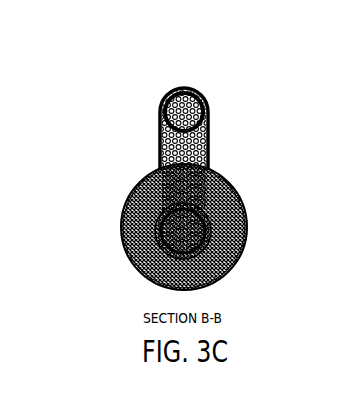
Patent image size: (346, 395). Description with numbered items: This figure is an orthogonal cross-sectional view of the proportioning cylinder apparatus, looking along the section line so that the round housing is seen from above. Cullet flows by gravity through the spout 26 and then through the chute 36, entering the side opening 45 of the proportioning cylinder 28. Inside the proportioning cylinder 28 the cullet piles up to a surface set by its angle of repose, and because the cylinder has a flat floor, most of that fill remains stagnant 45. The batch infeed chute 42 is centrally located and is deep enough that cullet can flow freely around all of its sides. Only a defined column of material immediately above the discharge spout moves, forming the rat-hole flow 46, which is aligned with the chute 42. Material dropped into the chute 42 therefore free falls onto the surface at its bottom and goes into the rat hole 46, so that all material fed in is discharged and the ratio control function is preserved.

The spout 26 is at (163, 97).
The chute 36 is at (160, 140).
The stagnant cullet 45 is at (160, 160).
The chute 42 is at (130, 195).
The proportioning cylinder 28 is at (121, 237).
The rat-hole flow 46 is at (245, 243).